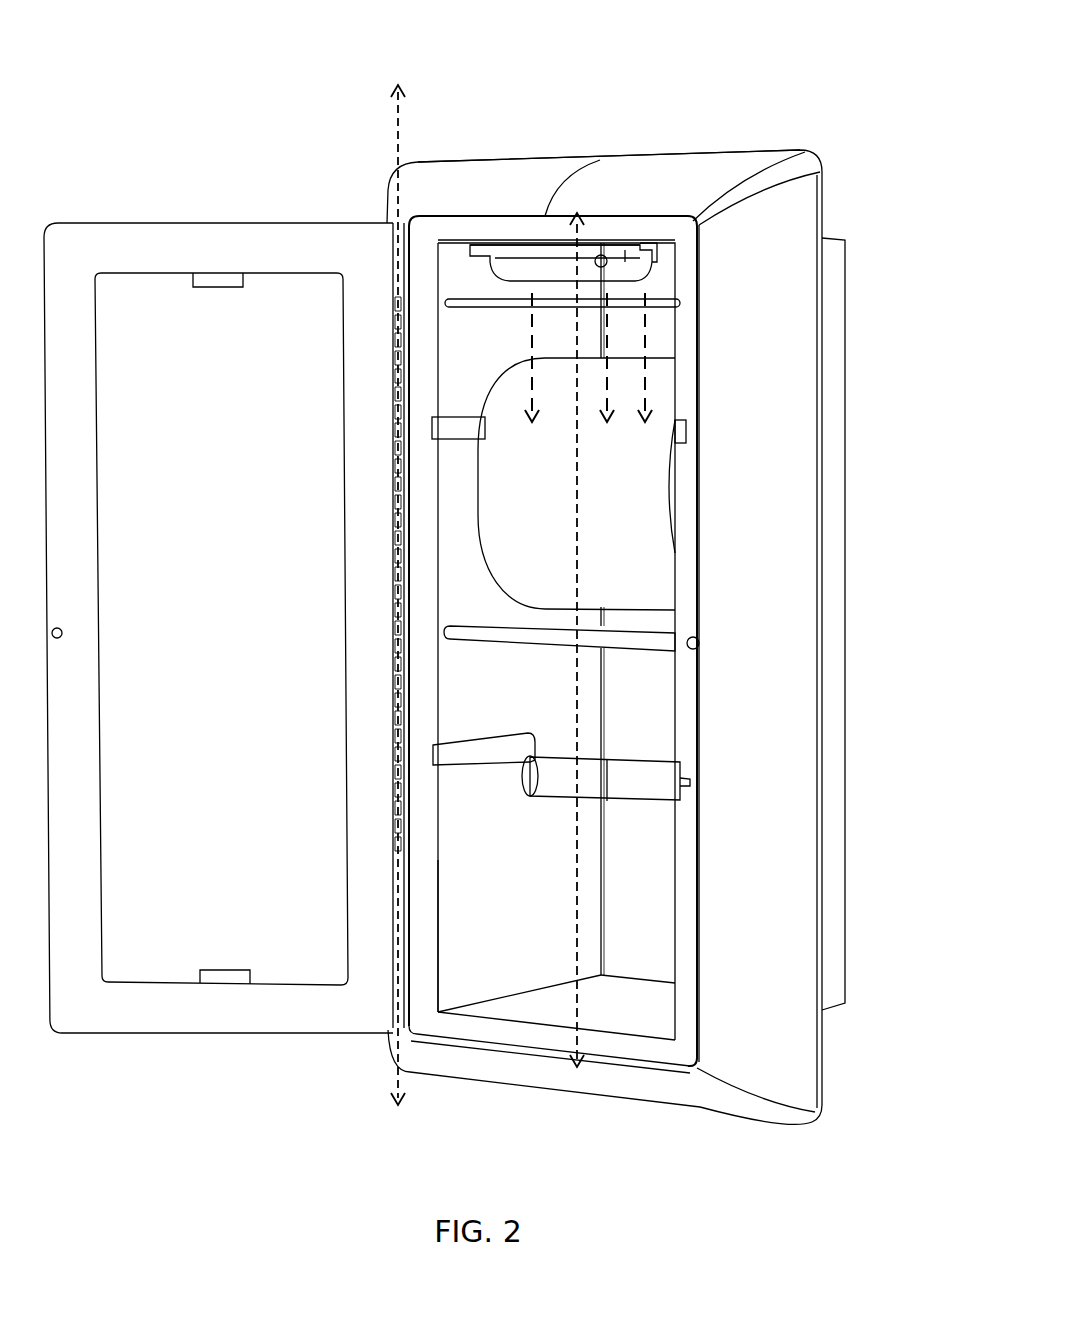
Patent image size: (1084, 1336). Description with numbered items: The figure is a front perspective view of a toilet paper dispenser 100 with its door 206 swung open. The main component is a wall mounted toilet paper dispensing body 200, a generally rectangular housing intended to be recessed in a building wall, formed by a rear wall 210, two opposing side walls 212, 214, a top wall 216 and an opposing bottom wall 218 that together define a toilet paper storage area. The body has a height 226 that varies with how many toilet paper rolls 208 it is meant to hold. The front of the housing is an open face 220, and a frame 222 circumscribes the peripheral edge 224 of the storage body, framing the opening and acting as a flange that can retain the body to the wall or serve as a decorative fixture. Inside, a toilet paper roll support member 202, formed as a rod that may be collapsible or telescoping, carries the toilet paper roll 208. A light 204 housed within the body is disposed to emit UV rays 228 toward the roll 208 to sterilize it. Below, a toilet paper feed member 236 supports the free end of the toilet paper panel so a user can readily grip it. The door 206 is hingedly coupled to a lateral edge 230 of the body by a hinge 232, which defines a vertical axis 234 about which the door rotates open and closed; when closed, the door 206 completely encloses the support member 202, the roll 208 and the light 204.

The toilet paper dispenser 100 is at (476, 1187).
The wall mounted toilet paper dispensing body 200 is at (788, 988).
The toilet paper roll support member 202 is at (578, 786).
The light 204 is at (510, 240).
The door 206 is at (127, 207).
The toilet paper roll 208 is at (622, 466).
The rear wall 210 is at (638, 613).
The side wall 212 is at (519, 627).
The side wall 214 is at (668, 712).
The top wall 216 is at (623, 205).
The bottom wall 218 is at (556, 1017).
The open face 220 is at (480, 866).
The frame 222 is at (760, 250).
The peripheral edge 224 is at (699, 368).
The height 226 is at (577, 1003).
The UV rays 228 is at (668, 320).
The lateral edge 230 is at (404, 760).
The hinge 232 is at (397, 353).
The vertical axis 234 is at (397, 118).
The toilet paper feed member 236 is at (638, 638).